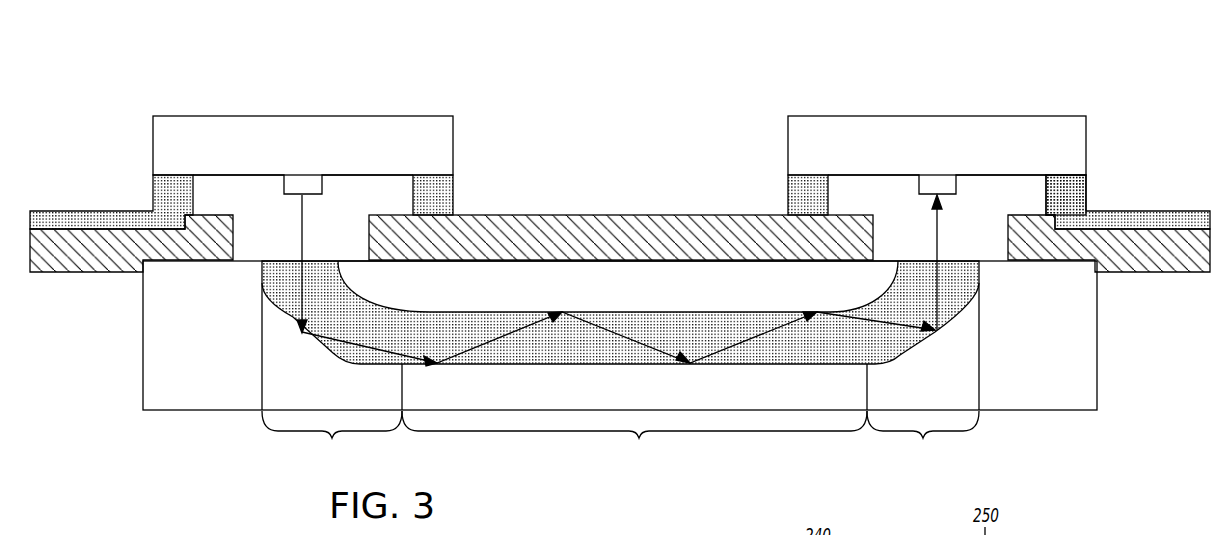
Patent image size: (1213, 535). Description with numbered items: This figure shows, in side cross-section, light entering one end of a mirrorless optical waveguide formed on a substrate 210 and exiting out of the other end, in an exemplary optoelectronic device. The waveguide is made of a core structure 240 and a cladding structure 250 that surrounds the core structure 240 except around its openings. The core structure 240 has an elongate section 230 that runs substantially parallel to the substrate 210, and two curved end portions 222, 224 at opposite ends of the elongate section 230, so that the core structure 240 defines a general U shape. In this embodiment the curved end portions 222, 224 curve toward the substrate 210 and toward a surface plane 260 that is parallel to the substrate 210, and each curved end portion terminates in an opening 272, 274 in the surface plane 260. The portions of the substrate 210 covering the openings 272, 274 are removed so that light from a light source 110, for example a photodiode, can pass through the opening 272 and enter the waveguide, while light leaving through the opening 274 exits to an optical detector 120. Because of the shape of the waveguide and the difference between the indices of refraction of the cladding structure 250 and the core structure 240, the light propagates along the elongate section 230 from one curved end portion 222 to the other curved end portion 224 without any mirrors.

The light source 110 is at (303, 116).
The optical detector 120 is at (937, 116).
The substrate 210 is at (515, 215).
The curved end portion 222 is at (332, 373).
The curved end portion 224 is at (923, 373).
The elongate section 230 is at (634, 437).
The core structure 240 is at (576, 340).
The cladding structure 250 is at (693, 292).
The surface plane 260 is at (152, 256).
The opening 272 is at (280, 261).
The opening 274 is at (958, 261).